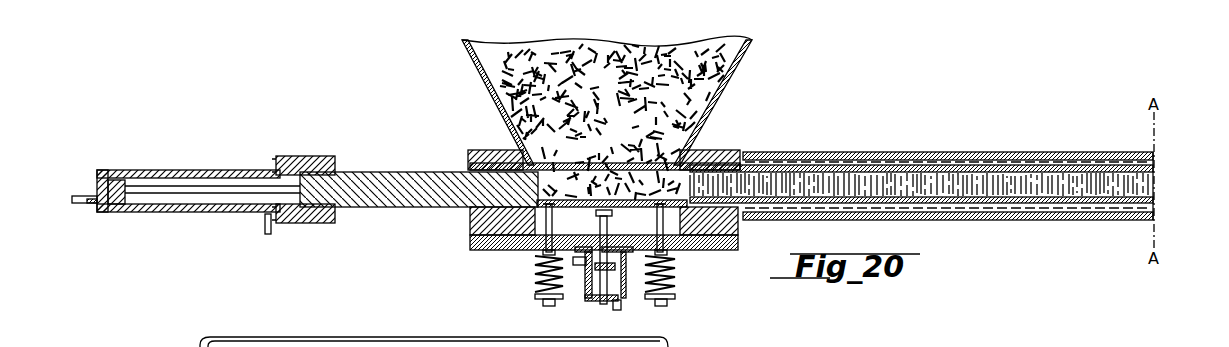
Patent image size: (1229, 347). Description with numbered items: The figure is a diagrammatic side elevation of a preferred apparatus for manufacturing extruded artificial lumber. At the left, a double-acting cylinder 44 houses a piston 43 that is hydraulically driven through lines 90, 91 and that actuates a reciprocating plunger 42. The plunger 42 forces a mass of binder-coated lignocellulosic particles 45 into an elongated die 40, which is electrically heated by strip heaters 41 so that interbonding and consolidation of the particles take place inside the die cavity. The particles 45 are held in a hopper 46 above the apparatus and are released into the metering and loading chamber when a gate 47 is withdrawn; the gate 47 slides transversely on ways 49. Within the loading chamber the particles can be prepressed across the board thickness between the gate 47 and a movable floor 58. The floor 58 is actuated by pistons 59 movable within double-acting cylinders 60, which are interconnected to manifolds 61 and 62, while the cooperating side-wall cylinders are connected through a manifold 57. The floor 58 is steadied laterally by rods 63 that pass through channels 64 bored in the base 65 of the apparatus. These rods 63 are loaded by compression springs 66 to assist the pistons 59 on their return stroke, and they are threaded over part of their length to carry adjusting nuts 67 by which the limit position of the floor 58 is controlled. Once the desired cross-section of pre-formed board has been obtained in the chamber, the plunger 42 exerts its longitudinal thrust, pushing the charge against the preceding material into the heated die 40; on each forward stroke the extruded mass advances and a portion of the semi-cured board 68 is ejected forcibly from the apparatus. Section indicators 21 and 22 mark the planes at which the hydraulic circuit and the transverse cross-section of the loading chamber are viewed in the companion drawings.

The section line 21 is at (595, 32).
The section line 22 is at (378, 138).
The elongated die 40 is at (946, 134).
The strip heaters 41 is at (1083, 259).
The reciprocating plunger 42 is at (400, 185).
The piston 43 is at (117, 200).
The double-acting cylinder 44 is at (225, 158).
The binder-coated lignocellulosic particles 45 is at (800, 74).
The hopper 46 is at (778, 104).
The gate 47 is at (748, 138).
The ways 49 is at (512, 163).
The manifold 57 is at (411, 342).
The floor 58 is at (612, 220).
The pistons 59 is at (622, 305).
The double-acting cylinders 60 is at (603, 304).
The manifold 61 is at (580, 268).
The manifold 62 is at (626, 313).
The rods 63 is at (676, 275).
The channels 64 is at (653, 232).
The base 65 is at (750, 238).
The compression springs 66 is at (676, 297).
The adjusting nuts 67 is at (668, 254).
The semi-cured board 68 is at (1145, 190).
The line 90 is at (268, 235).
The line 91 is at (78, 204).